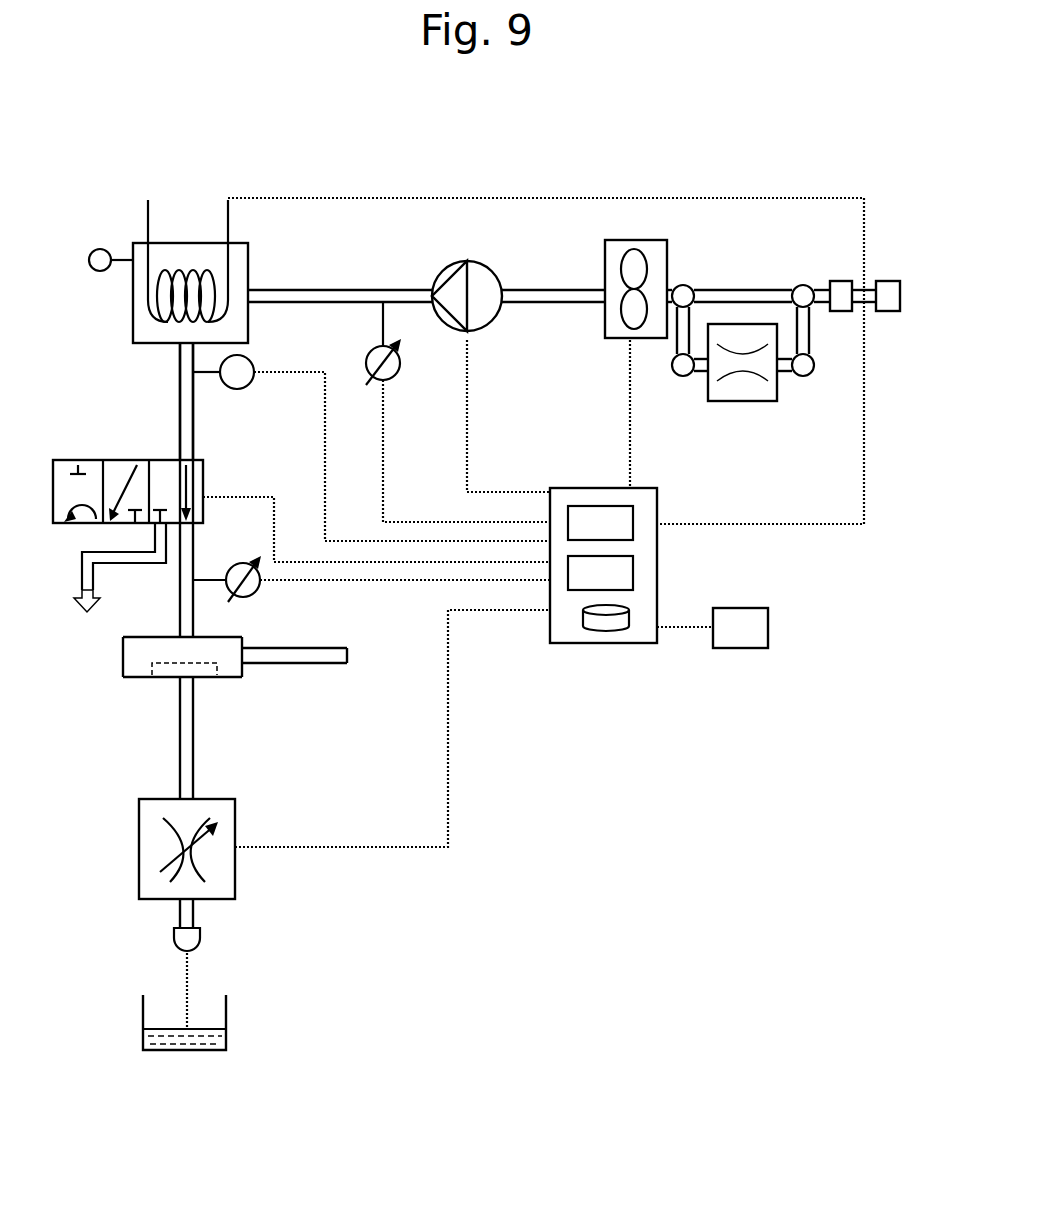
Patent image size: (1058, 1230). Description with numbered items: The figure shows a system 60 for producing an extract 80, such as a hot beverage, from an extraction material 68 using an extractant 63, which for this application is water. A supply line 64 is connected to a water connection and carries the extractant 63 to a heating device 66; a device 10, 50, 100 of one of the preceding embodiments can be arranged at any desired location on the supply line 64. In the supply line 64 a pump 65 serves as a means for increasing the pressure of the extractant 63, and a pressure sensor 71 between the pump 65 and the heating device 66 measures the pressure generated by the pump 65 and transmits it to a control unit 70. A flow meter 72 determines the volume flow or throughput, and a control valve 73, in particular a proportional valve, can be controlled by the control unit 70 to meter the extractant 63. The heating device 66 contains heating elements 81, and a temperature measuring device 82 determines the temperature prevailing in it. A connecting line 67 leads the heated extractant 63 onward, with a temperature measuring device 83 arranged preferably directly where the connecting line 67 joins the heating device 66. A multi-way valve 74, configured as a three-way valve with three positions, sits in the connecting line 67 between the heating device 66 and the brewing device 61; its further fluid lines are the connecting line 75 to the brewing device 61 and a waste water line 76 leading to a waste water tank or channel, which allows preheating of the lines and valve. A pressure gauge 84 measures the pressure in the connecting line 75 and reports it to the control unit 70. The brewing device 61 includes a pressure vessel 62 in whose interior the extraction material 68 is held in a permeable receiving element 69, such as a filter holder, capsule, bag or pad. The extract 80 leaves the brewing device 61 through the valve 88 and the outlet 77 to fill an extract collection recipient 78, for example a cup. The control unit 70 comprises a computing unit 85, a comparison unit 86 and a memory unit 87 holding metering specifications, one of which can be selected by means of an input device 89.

The device 10 is at (866, 193).
The device 50 is at (866, 193).
The device 100 is at (851, 280).
The system 60 is at (451, 212).
The brewing device 61 is at (202, 705).
The pressure vessel 62 is at (202, 705).
The extractant 63 is at (757, 286).
The supply line 64 is at (699, 290).
The pump 65 is at (485, 272).
The heating device 66 is at (210, 235).
The connecting line 67 is at (180, 404).
The extraction material 68 is at (217, 668).
The receiving element 69 is at (210, 679).
The control unit 70 is at (636, 554).
The pressure sensor 71 is at (394, 385).
The flow meter 72 is at (637, 250).
The control valve 73 is at (742, 392).
The multi-way valve 74 is at (100, 460).
The connecting line 75 is at (180, 610).
The waste water line 76 is at (88, 580).
The outlet 77 is at (196, 936).
The extract collection recipient 78 is at (237, 1070).
The extract 80 is at (198, 1040).
The heating elements 81 is at (185, 296).
The temperature measuring device 82 is at (97, 270).
The temperature measuring device 83 is at (247, 360).
The pressure gauge 84 is at (262, 586).
The computing unit 85 is at (586, 520).
The comparison unit 86 is at (614, 580).
The memory unit 87 is at (594, 622).
The valve 88 is at (230, 866).
The input device 89 is at (742, 640).